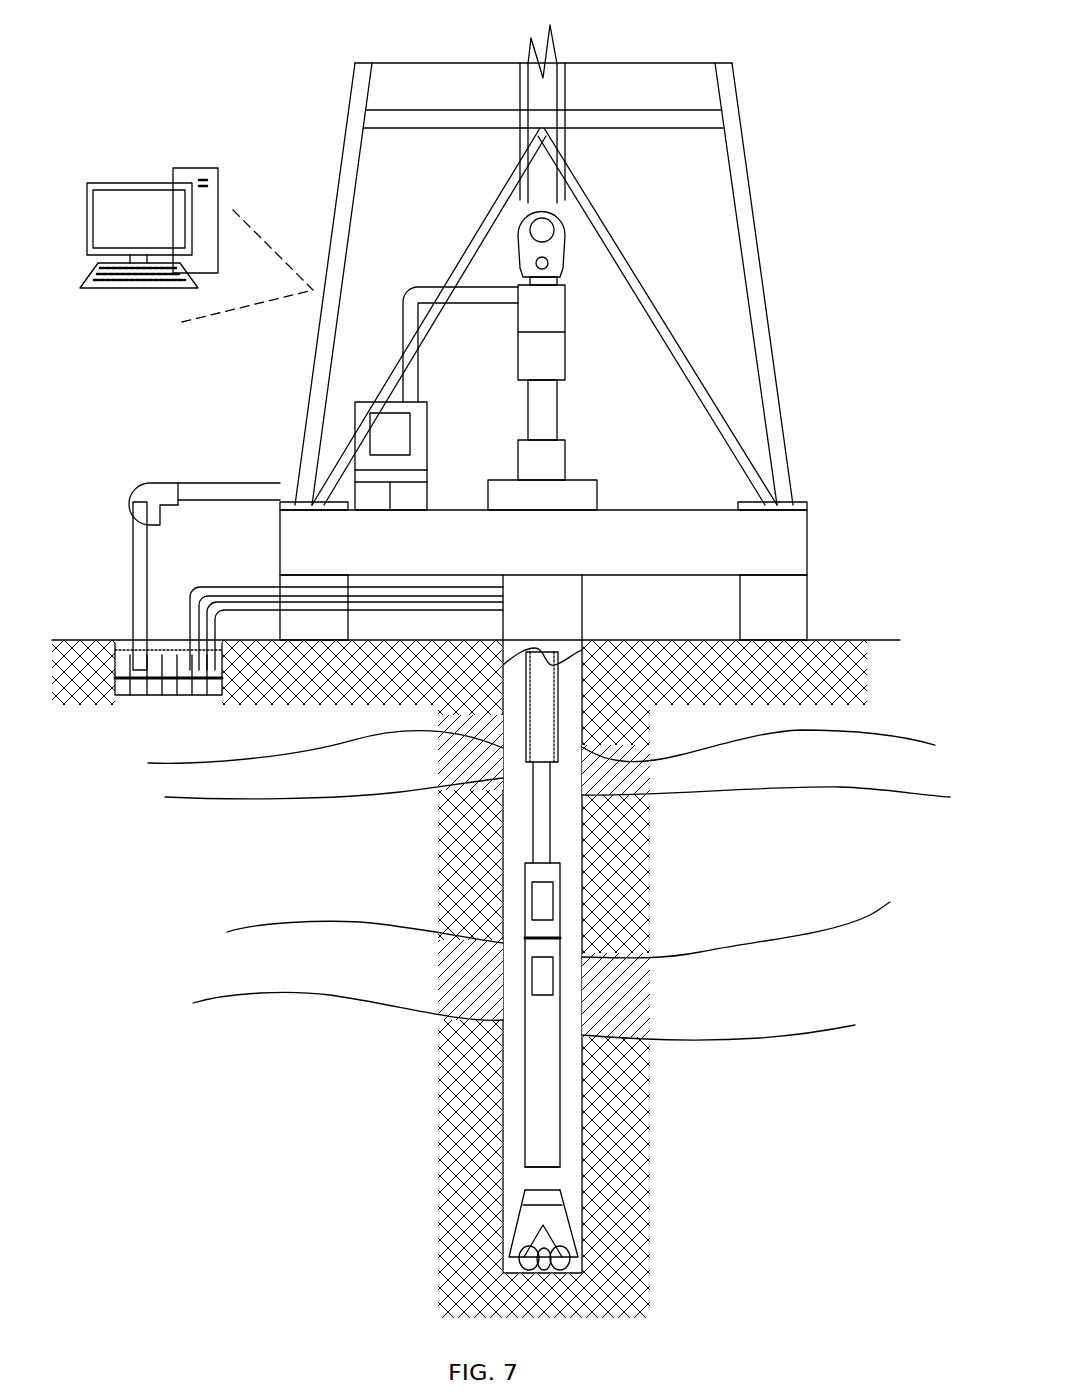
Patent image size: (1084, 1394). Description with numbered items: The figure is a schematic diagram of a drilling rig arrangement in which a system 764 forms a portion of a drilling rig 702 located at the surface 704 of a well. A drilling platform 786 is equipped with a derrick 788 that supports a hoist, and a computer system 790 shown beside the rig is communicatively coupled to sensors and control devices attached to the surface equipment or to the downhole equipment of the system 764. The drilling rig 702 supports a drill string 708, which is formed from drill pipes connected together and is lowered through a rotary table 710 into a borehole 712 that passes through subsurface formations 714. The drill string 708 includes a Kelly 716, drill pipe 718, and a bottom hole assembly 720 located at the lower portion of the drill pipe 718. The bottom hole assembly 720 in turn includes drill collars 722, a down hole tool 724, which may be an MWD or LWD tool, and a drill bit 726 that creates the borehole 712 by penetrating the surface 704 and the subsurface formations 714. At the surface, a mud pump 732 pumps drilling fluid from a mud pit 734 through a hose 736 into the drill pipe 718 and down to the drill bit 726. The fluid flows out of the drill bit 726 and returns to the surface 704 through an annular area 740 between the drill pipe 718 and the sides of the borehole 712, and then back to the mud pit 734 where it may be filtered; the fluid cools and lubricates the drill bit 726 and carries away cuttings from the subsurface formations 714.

The system 764 is at (241, 70).
The computer system 790 is at (173, 172).
The drilling rig 702 is at (586, 267).
The derrick 788 is at (750, 200).
The Kelly 716 is at (557, 407).
The rotary table 710 is at (597, 490).
The drilling platform 786 is at (807, 522).
The hose 736 is at (248, 484).
The mud pump 732 is at (135, 484).
The mud pit 734 is at (167, 680).
The surface 704 is at (857, 640).
The subsurface formations 714 is at (150, 752).
The bottom hole assembly 720 is at (435, 855).
The drill collars 722 is at (560, 722).
The drill pipe 718 is at (552, 835).
The annular area 740 is at (570, 872).
The drill string 708 is at (566, 1095).
The borehole 712 is at (575, 1148).
The down hole tool 724 is at (548, 1155).
The drill bit 726 is at (555, 1225).